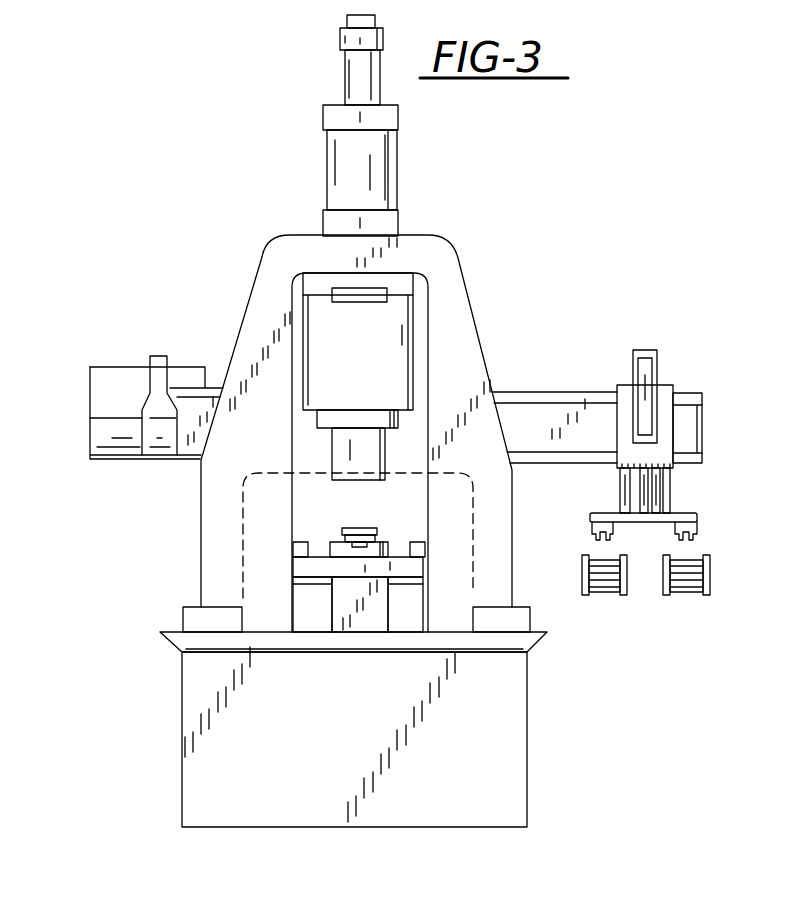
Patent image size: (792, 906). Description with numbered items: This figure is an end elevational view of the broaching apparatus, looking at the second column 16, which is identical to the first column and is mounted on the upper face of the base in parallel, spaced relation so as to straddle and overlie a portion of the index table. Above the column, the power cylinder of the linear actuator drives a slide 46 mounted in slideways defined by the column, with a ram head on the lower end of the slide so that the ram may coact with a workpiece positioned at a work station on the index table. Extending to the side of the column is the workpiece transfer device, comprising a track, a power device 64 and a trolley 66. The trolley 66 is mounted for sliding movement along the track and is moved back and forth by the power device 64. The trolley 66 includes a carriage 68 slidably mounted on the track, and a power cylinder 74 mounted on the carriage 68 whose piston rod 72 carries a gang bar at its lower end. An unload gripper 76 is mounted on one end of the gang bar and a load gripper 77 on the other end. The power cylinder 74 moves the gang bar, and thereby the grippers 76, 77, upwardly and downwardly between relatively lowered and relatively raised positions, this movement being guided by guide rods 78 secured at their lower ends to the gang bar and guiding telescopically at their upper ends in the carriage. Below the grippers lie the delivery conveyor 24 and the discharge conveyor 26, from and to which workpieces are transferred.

The second column 16 is at (458, 290).
The delivery conveyor 24 is at (683, 583).
The discharge conveyor 26 is at (600, 583).
The slide 46 is at (358, 527).
The power device 64 is at (187, 367).
The trolley 66 is at (670, 385).
The carriage 68 is at (617, 385).
The piston rod 72 is at (645, 493).
The power cylinder 74 is at (658, 352).
The unload gripper 76 is at (593, 530).
The load gripper 77 is at (697, 530).
The guide rods 78 is at (620, 492).